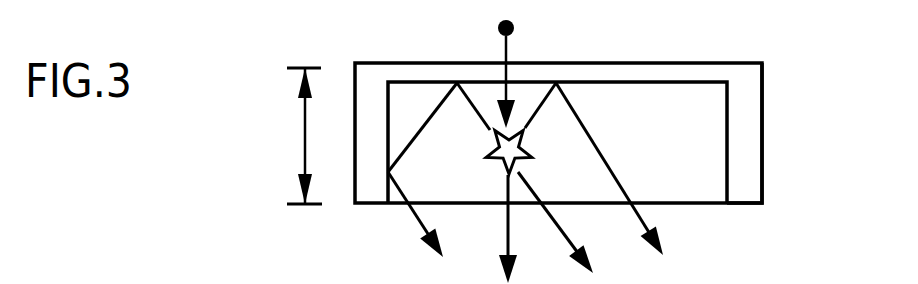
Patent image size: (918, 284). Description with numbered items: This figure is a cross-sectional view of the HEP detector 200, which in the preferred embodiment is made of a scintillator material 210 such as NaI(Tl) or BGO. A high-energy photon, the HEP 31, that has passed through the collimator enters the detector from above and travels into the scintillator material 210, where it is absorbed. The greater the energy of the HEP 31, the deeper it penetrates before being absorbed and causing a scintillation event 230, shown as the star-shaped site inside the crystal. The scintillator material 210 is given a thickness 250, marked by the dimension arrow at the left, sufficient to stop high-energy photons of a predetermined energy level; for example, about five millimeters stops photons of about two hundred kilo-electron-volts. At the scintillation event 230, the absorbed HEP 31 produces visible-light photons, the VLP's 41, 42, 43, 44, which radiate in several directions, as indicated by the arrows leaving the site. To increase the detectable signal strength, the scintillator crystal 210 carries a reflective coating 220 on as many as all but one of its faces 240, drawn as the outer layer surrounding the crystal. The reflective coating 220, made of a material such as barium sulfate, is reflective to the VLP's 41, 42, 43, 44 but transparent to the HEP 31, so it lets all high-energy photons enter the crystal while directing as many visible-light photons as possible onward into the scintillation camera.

The HEP detector 200 is at (508, 130).
The scintillator material 210 is at (711, 133).
The reflective coating 220 is at (742, 98).
The faces 240 is at (730, 175).
The thickness 250 is at (288, 136).
The HEP 31 is at (514, 26).
The scintillation event 230 is at (490, 160).
The VLP 41 is at (633, 213).
The VLP 42 is at (563, 228).
The VLP 43 is at (510, 230).
The VLP 44 is at (417, 217).